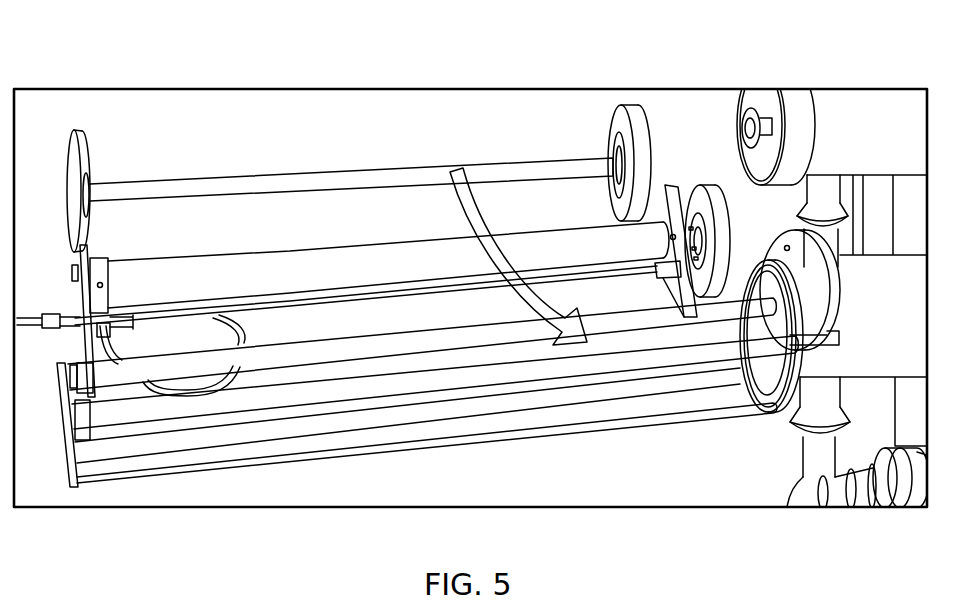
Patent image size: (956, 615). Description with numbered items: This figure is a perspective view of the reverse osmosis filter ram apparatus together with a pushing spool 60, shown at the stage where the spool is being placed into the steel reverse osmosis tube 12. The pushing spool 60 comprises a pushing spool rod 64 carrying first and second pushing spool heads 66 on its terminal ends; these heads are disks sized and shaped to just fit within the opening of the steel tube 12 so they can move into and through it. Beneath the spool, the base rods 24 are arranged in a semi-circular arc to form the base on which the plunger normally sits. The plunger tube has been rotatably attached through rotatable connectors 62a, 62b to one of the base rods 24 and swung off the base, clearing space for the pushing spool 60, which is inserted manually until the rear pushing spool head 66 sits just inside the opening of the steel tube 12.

The steel reverse osmosis tube 12 is at (880, 287).
The base rods 24 is at (133, 370).
The pushing spool 60 is at (512, 172).
The rotatable connector 62a is at (82, 328).
The rotatable connector 62b is at (688, 287).
The pushing spool rod 64 is at (276, 181).
The pushing spool heads 66 is at (72, 133).